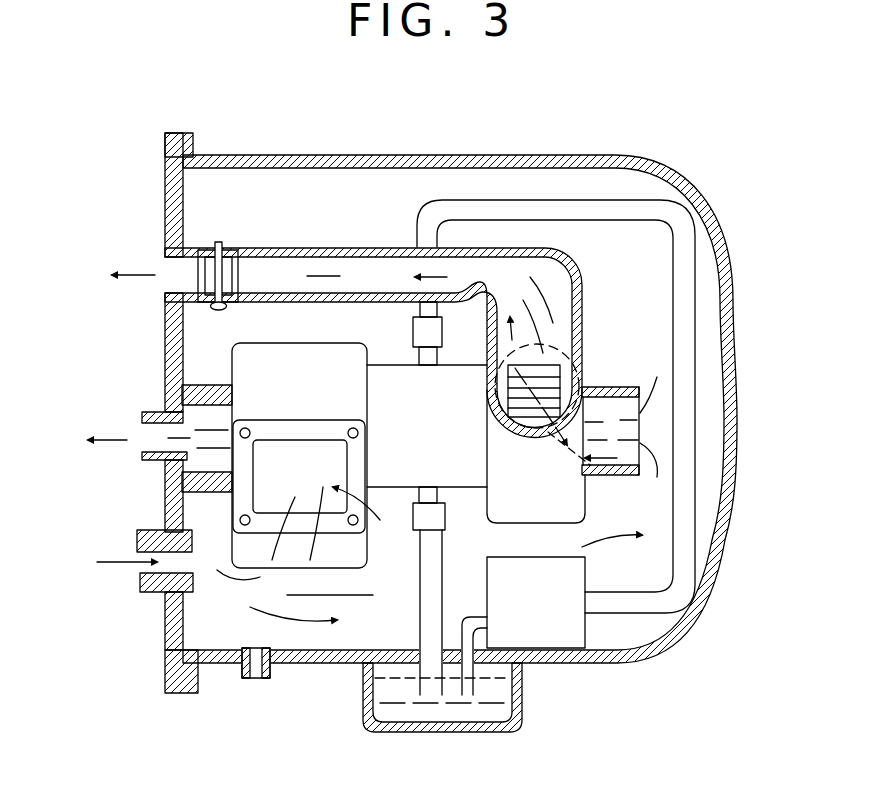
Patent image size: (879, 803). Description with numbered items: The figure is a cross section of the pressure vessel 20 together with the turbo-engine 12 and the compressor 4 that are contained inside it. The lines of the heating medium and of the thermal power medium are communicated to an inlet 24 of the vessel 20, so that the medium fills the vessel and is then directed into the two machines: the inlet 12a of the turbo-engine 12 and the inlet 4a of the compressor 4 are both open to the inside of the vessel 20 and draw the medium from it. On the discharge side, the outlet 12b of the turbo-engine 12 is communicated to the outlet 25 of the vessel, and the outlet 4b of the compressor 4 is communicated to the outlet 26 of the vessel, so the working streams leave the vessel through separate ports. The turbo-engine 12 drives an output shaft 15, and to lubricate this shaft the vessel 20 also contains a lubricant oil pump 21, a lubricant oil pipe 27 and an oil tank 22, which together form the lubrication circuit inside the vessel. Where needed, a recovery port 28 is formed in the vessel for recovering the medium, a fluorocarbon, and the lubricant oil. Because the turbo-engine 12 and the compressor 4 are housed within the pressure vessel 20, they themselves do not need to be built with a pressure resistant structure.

The pressure vessel 20 is at (495, 153).
The lubricant oil pipe 27 is at (682, 370).
The outlet of the compressor 4b is at (295, 263).
The outlet of the vessel 26 is at (163, 288).
The compressor 4 is at (572, 495).
The inlet of the compressor 4a is at (630, 433).
The output shaft 15 is at (432, 452).
The turbo-engine 12 is at (318, 343).
The inlet of the turbo-engine 12a is at (283, 452).
The outlet of the turbo-engine 12b is at (217, 412).
The outlet of the vessel 25 is at (143, 443).
The inlet of the vessel 24 is at (137, 570).
The lubricant oil pump 21 is at (572, 628).
The oil tank 22 is at (523, 700).
The recovery port 28 is at (253, 678).